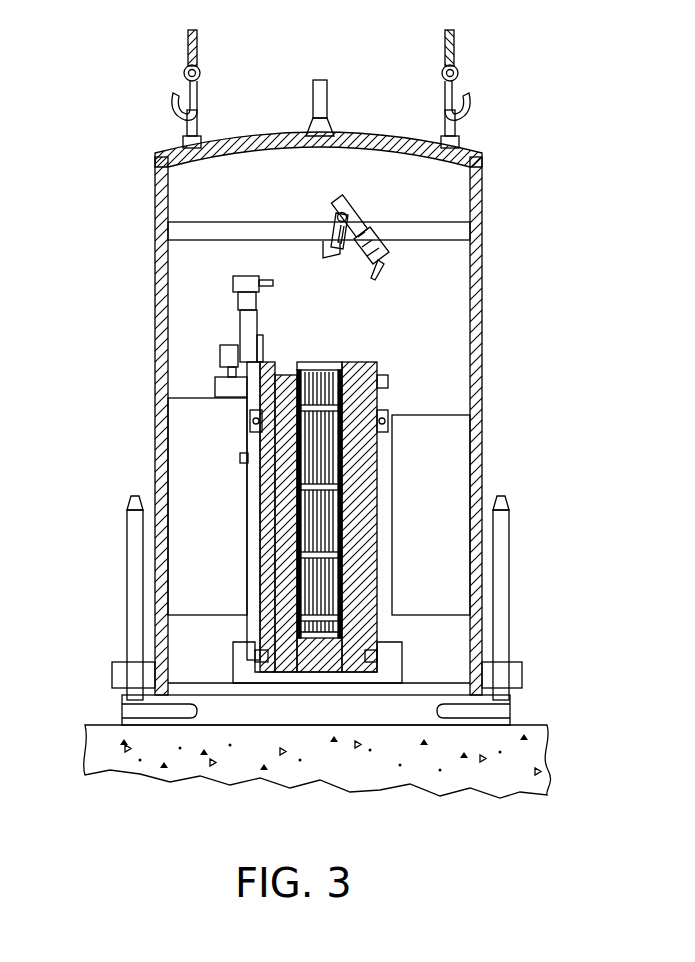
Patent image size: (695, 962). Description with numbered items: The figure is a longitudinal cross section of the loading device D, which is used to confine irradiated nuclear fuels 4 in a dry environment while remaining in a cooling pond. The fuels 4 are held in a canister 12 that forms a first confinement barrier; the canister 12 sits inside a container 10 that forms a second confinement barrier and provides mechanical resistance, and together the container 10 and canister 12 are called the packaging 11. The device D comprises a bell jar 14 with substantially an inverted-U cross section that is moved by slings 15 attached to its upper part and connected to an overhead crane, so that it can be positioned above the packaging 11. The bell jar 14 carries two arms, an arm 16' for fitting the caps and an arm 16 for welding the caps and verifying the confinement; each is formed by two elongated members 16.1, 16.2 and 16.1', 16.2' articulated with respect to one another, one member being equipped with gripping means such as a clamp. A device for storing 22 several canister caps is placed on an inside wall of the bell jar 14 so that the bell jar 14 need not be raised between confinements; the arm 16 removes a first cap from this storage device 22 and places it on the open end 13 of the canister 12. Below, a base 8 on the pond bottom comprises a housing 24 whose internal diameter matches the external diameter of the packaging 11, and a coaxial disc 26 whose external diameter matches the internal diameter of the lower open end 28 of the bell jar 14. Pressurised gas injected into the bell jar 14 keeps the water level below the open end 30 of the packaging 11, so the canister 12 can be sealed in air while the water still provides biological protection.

The device D is at (514, 112).
The irradiated nuclear fuels 4 is at (325, 469).
The base 8 is at (108, 706).
The container 10 is at (360, 567).
The packaging 11 is at (256, 500).
The canister 12 is at (345, 400).
The open end of the canister 13 is at (378, 360).
The bell jar 14 is at (482, 330).
The slings 15 is at (447, 38).
The arm 16 is at (366, 231).
The elongated member 16.1 is at (408, 256).
The elongated member 16.2 is at (309, 217).
The arm 16' is at (222, 336).
The elongated member 16.1' is at (302, 293).
The elongated member 16.2' is at (171, 368).
The device for storing canister caps 22 is at (450, 483).
The housing 24 is at (392, 660).
The disc 26 is at (443, 690).
The lower open end of the bell jar 28 is at (155, 672).
The open end of the packaging 30 is at (306, 362).